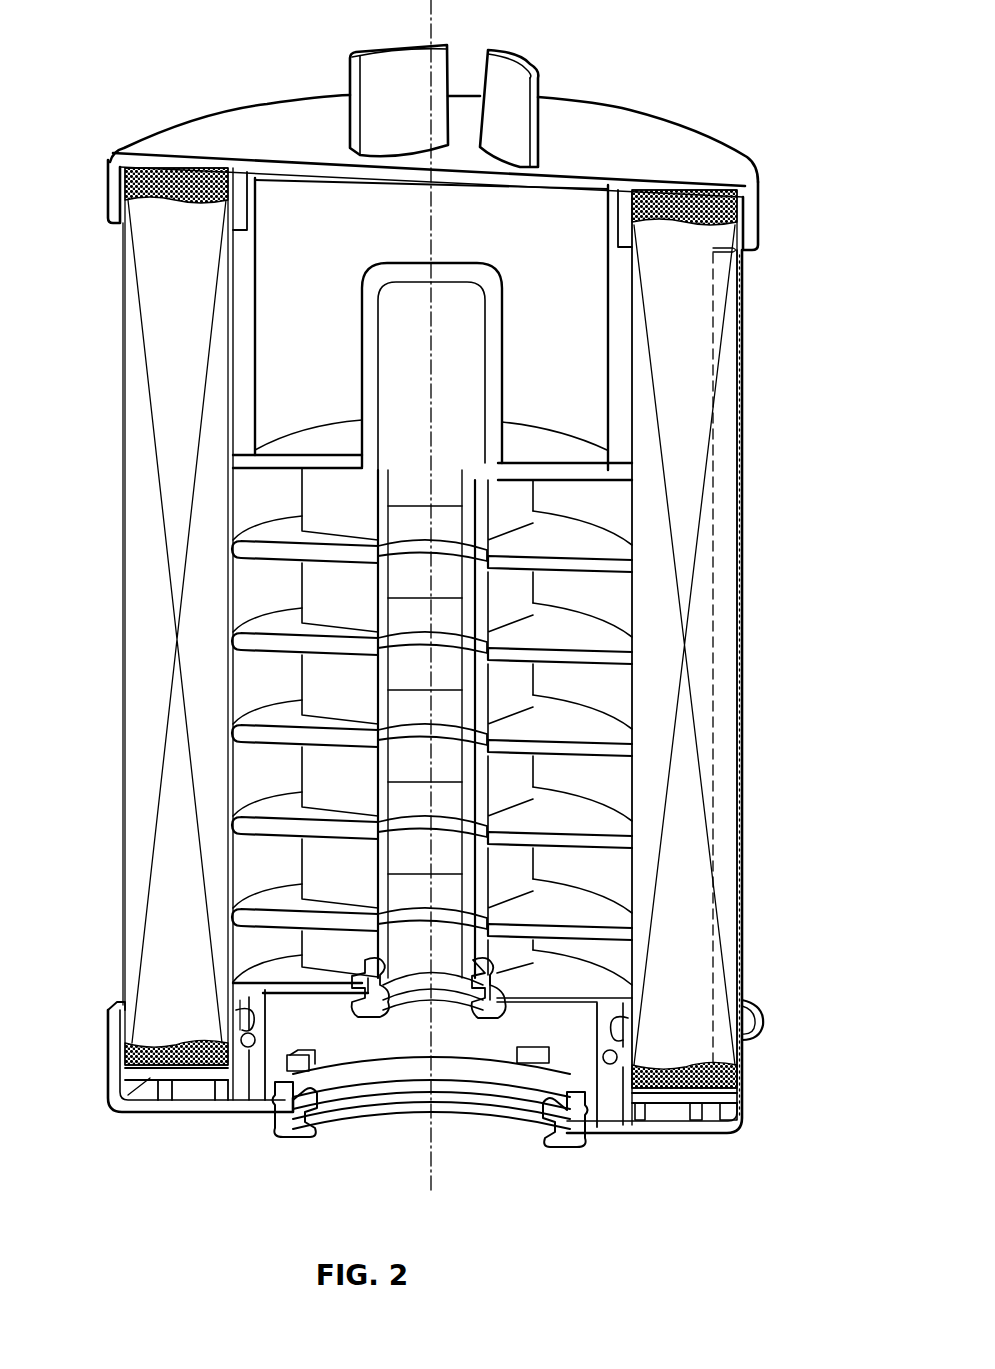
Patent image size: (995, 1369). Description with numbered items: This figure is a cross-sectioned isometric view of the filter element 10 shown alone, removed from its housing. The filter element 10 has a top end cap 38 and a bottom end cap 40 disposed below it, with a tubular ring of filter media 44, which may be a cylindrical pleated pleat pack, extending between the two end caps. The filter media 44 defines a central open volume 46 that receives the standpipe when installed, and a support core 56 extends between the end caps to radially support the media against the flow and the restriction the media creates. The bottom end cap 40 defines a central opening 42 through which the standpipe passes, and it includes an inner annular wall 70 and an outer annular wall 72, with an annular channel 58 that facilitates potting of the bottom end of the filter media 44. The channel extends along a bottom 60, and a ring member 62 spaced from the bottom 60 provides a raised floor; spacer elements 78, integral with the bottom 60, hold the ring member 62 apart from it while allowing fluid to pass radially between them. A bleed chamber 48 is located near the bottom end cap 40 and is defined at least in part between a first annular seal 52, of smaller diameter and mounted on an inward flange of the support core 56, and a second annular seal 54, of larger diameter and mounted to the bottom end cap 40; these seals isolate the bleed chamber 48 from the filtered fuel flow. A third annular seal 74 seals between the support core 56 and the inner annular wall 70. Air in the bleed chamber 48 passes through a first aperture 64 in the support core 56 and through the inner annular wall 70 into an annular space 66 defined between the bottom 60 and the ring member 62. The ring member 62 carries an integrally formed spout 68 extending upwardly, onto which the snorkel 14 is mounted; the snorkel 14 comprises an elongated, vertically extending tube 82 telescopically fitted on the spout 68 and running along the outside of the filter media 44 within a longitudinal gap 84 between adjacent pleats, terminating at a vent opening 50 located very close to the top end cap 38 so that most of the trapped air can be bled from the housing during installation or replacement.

The filter element 10 is at (769, 40).
The snorkel 14 is at (718, 700).
The top end cap 38 is at (190, 130).
The bottom end cap 40 is at (136, 1120).
The central opening 42 is at (398, 1138).
The tubular ring of filter media 44 is at (140, 600).
The central open volume 46 is at (262, 500).
The bleed chamber 48 is at (588, 1062).
The vent opening 50 is at (713, 268).
The first annular seal 52 is at (490, 1008).
The second annular seal 54 is at (545, 1140).
The support core 56 is at (580, 837).
The annular channel 58 is at (728, 1113).
The bottom 60 is at (200, 1107).
The ring member 62 is at (140, 1073).
The first aperture 64 is at (333, 1083).
The annular space 66 is at (190, 1087).
The spout 68 is at (710, 1040).
The inner annular wall 70 is at (213, 1063).
The outer annular wall 72 is at (107, 1048).
The third annular seal 74 is at (238, 1028).
The spacer element 78 is at (165, 1096).
The tube 82 is at (743, 578).
The longitudinal gap 84 is at (713, 563).